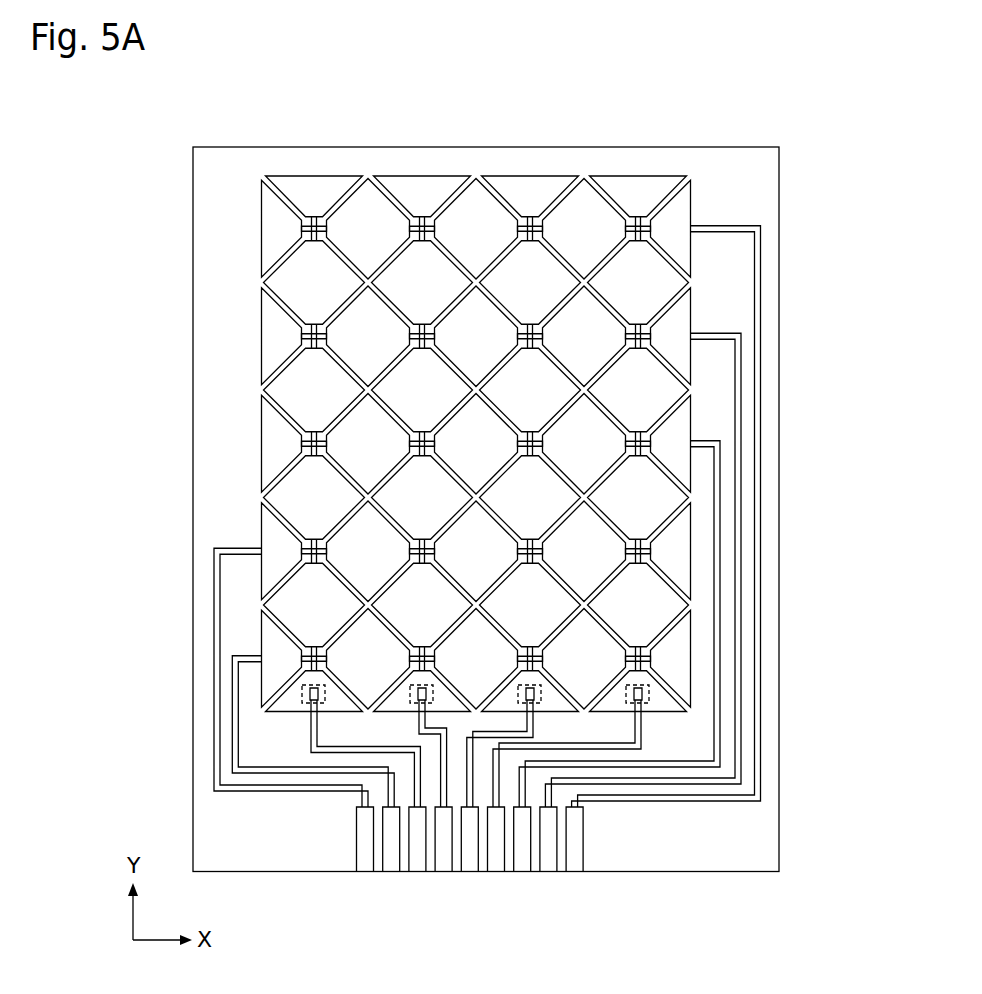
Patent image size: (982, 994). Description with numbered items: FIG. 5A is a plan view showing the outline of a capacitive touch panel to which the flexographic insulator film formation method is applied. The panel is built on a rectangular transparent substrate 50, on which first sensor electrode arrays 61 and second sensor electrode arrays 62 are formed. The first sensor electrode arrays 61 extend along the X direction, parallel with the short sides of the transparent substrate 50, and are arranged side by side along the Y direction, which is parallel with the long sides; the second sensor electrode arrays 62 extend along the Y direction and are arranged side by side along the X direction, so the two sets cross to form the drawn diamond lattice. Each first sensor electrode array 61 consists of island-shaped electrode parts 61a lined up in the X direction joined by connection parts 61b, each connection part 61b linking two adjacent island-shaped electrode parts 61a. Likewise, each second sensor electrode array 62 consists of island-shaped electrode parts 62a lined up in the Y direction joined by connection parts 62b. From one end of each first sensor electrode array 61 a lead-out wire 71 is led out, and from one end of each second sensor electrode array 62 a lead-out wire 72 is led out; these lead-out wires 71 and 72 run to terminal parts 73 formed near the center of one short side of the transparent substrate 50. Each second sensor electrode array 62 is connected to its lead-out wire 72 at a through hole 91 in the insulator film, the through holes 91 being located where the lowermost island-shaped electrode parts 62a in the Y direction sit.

The transparent substrate 50 is at (737, 872).
The first sensor electrode array 61 is at (407, 444).
The island-shaped electrode part 61a is at (273, 435).
The connection part 61b is at (310, 444).
The second sensor electrode array 62 is at (476, 388).
The island-shaped electrode part 62a is at (410, 270).
The connection part 62b is at (425, 223).
The lead-out wire 71 is at (740, 388).
The lead-out wire 72 is at (420, 722).
The terminal part 73 is at (590, 857).
The through hole 91 is at (650, 694).